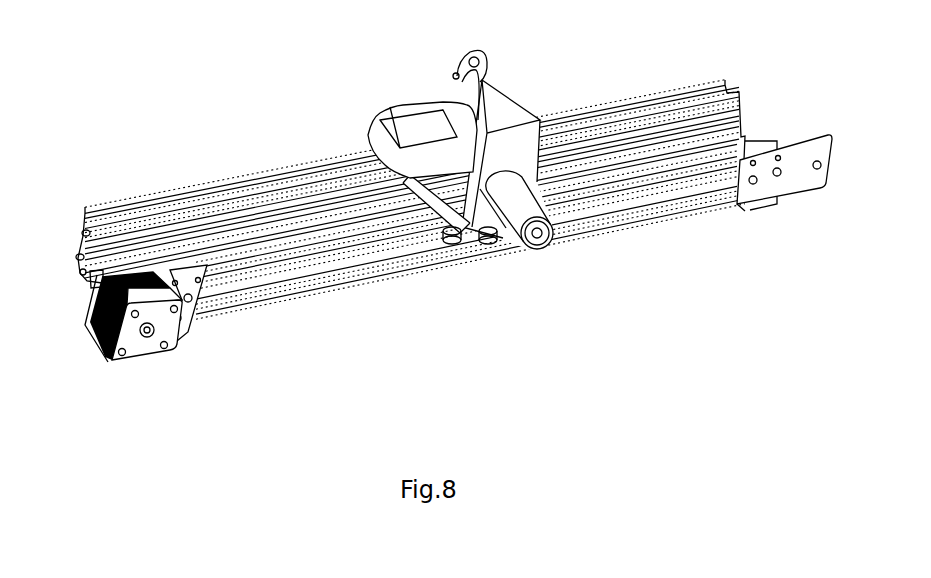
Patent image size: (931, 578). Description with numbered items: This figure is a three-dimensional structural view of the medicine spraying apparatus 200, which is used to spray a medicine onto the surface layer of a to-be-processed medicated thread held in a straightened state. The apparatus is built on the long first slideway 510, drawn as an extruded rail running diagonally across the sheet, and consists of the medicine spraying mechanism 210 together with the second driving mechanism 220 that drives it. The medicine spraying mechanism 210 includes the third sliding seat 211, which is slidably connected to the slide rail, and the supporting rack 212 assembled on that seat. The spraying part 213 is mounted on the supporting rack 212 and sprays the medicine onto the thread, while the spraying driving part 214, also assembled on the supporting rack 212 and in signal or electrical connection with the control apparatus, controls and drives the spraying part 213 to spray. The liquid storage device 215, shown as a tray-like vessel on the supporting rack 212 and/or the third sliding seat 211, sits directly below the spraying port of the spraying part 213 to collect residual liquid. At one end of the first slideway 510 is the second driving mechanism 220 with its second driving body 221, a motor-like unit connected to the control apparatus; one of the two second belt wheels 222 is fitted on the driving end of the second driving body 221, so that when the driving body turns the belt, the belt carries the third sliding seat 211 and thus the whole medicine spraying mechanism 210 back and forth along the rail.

The medicine spraying apparatus 200 is at (319, 215).
The medicine spraying mechanism 210 is at (483, 179).
The third sliding seat 211 is at (434, 210).
The supporting rack 212 is at (509, 105).
The spraying part 213 is at (466, 44).
The spraying driving part 214 is at (549, 239).
The liquid storage device 215 is at (417, 122).
The second driving mechanism 220 is at (133, 333).
The second driving body 221 is at (140, 357).
The second belt wheel 222 is at (90, 280).
The first slideway 510 is at (263, 170).